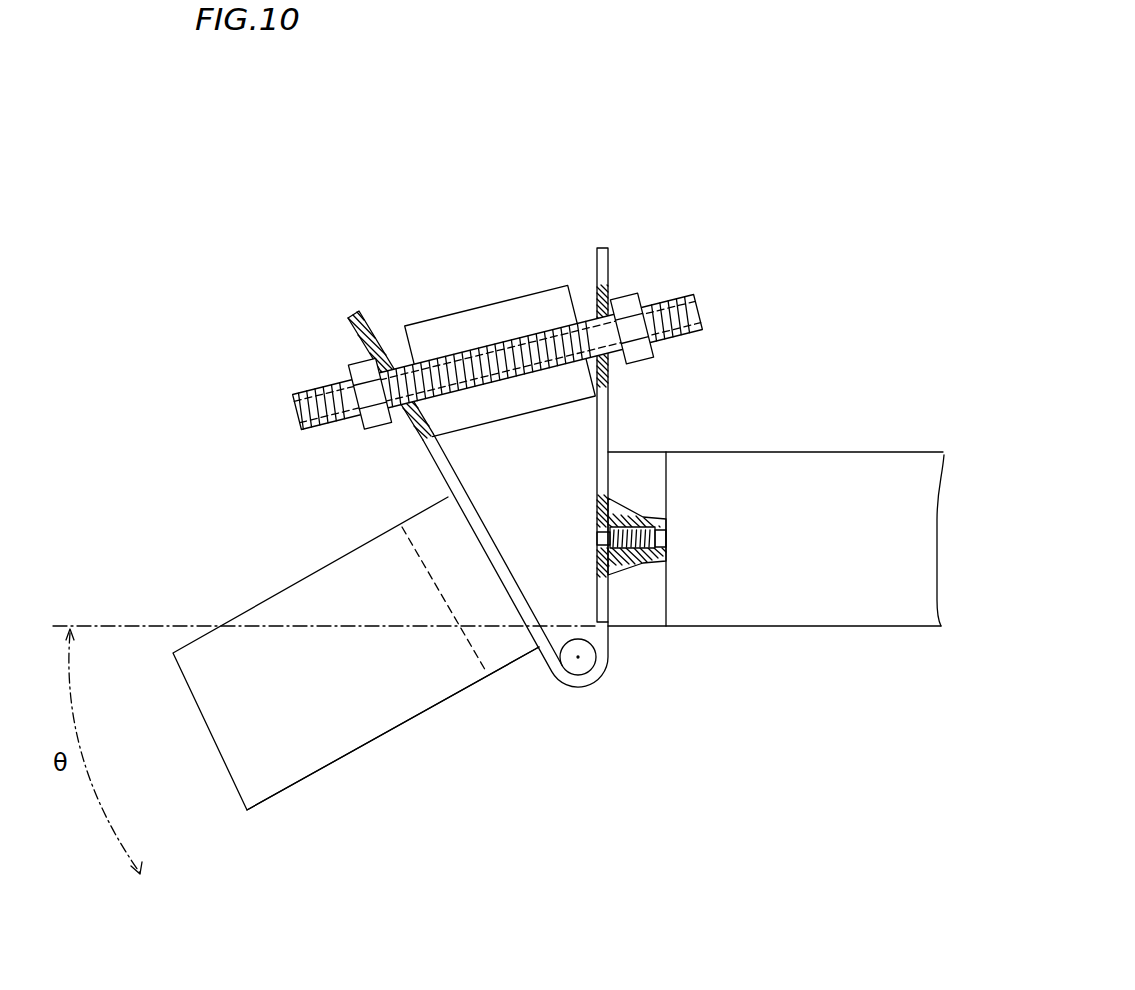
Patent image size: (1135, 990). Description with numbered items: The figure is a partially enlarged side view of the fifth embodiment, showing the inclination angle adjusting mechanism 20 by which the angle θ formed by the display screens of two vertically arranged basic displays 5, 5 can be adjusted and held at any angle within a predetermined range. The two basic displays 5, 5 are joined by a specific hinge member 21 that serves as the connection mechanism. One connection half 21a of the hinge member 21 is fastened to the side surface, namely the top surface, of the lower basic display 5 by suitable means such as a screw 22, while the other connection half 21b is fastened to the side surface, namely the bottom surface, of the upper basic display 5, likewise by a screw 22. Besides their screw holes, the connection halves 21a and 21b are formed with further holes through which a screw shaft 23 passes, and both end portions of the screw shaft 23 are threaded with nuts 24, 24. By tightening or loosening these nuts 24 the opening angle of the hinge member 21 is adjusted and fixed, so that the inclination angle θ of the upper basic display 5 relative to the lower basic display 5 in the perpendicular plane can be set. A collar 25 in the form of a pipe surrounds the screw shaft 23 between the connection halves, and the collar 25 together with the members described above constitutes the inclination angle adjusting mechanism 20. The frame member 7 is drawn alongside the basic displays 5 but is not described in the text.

The basic display 5 is at (387, 737).
The frame member 7 is at (502, 647).
The inclination angle adjusting mechanism 20 is at (455, 111).
The specific hinge member 21 is at (461, 425).
The connection half 21a is at (603, 422).
The other connection half 21b is at (432, 455).
The screw 22 is at (601, 530).
The screw shaft 23 is at (699, 298).
The nut 24 is at (350, 367).
The collar 25 is at (454, 333).